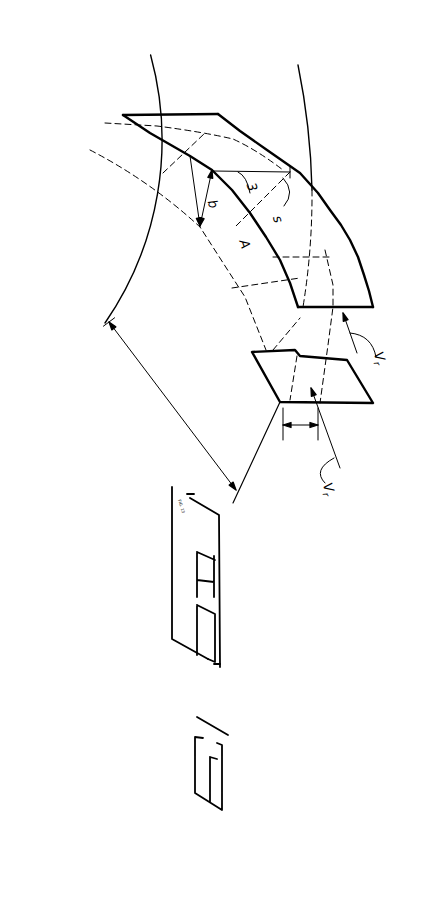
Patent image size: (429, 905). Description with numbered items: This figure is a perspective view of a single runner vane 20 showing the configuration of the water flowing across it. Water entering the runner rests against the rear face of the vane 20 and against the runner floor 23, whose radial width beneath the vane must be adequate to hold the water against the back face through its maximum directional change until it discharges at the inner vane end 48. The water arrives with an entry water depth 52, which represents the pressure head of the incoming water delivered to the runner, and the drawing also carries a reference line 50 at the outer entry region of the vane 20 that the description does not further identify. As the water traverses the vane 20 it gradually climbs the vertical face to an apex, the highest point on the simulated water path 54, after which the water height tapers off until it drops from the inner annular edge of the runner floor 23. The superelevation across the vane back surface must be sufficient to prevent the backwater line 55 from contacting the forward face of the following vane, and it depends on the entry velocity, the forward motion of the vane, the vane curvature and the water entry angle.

The vane 20 is at (352, 252).
The runner floor 23 is at (169, 399).
The inner vane end 48 is at (190, 191).
The inner reference arc 50 is at (160, 125).
The water depth 52 is at (300, 410).
The highest point on the simulated water path 54 is at (313, 188).
The backwater line 55 is at (226, 267).